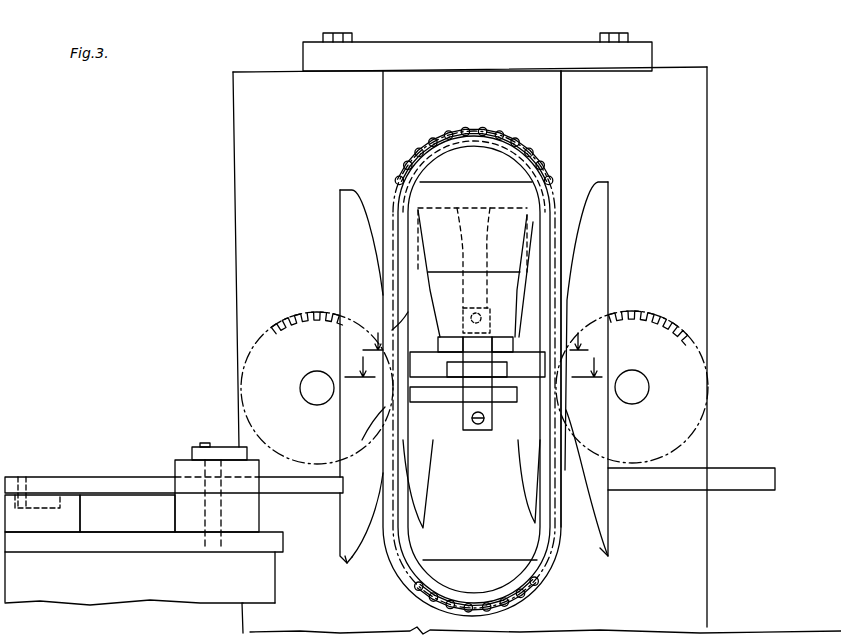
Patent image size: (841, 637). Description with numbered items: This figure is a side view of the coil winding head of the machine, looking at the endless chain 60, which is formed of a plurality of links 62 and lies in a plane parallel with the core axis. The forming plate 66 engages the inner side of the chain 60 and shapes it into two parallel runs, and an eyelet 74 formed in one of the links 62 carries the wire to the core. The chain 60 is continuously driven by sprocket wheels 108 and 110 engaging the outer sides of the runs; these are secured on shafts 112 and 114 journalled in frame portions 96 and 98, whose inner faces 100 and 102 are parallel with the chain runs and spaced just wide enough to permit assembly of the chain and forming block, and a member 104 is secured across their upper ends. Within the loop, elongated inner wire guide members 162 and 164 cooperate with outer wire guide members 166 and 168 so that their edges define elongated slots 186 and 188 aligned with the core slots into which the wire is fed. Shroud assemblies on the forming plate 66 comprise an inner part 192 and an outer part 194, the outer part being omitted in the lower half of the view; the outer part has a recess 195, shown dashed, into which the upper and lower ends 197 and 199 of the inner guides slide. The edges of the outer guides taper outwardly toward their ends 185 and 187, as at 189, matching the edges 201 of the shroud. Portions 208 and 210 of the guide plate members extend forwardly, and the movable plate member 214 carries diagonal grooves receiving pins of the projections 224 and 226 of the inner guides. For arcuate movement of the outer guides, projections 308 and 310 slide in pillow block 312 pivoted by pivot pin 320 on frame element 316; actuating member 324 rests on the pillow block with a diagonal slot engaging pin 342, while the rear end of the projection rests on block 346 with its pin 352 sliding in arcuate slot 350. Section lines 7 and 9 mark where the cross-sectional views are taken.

The endless chain 60 is at (498, 128).
The links 62 is at (445, 140).
The forming plate 66 is at (480, 140).
The eyelet 74 is at (510, 600).
The frame portion 96 is at (234, 182).
The frame portion 98 is at (707, 213).
The inner face 100 is at (385, 108).
The inner face 102 is at (560, 101).
The member 104 is at (542, 42).
The sprocket wheel 108 is at (302, 320).
The sprocket wheel 110 is at (651, 312).
The shaft 112 is at (305, 379).
The shaft 114 is at (639, 372).
The inner wire guide member 162 is at (430, 438).
The inner wire guide member 164 is at (550, 456).
The outer wire guide member 166 is at (368, 435).
The outer wire guide member 168 is at (570, 430).
The end 185 is at (354, 567).
The elongated slot 186 is at (394, 328).
The end 187 is at (348, 200).
The elongated slot 188 is at (566, 318).
The taper 189 is at (381, 522).
The inner shroud part 192 is at (520, 172).
The outer shroud part 194 is at (535, 181).
The recess 195 is at (440, 212).
The upper end 197 is at (420, 225).
The lower end 199 is at (426, 516).
The edges 201 is at (425, 262).
The portion 208 is at (522, 402).
The portion 210 is at (508, 330).
The movable plate member 214 is at (506, 366).
The projection 224 is at (437, 385).
The projection 226 is at (530, 351).
The projection 308 is at (107, 476).
The projection 310 is at (742, 468).
The pillow block 312 is at (176, 459).
The frame element 316 is at (167, 553).
The pivot pin 320 is at (215, 520).
The actuating member 324 is at (226, 446).
The pin 342 is at (206, 443).
The block 346 is at (84, 513).
The arcuate slot 350 is at (42, 509).
The pin 352 is at (24, 475).
The section line 7— 7 is at (473, 359).
The section line 9— 9 is at (475, 333).